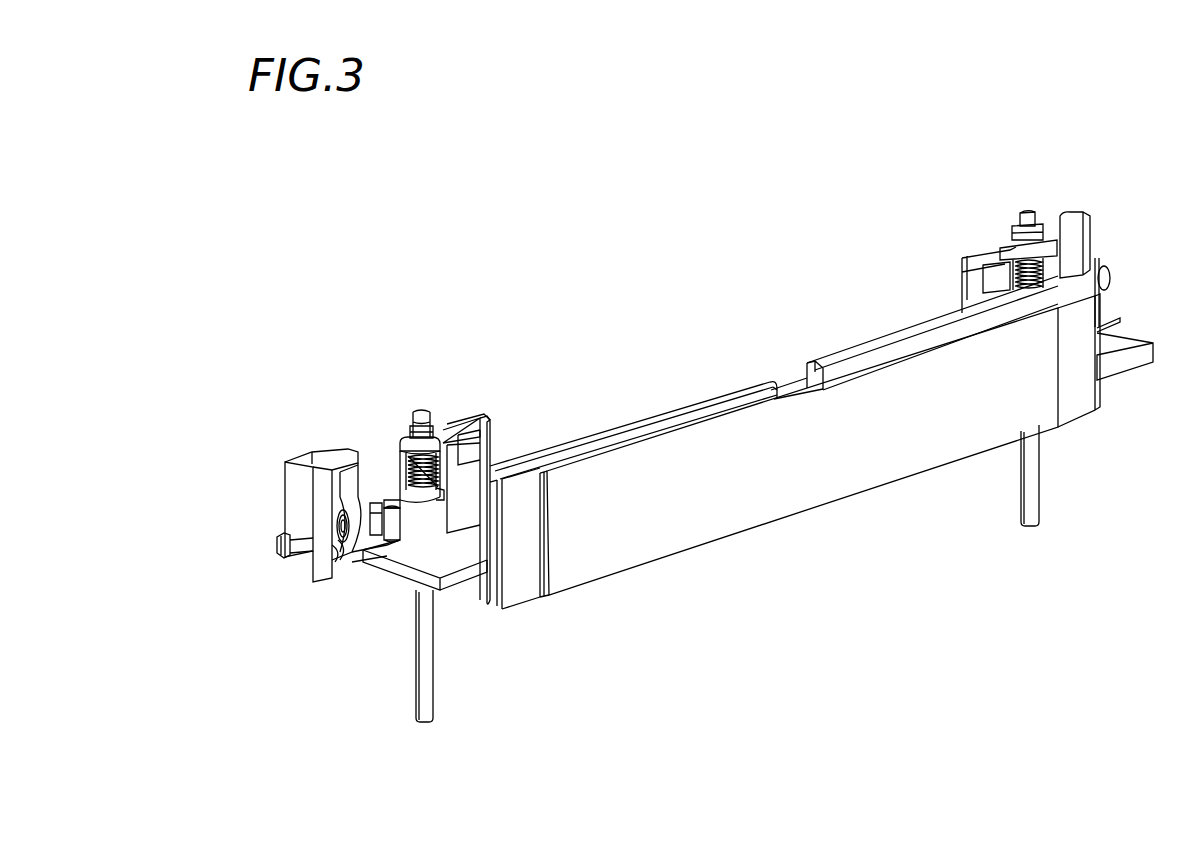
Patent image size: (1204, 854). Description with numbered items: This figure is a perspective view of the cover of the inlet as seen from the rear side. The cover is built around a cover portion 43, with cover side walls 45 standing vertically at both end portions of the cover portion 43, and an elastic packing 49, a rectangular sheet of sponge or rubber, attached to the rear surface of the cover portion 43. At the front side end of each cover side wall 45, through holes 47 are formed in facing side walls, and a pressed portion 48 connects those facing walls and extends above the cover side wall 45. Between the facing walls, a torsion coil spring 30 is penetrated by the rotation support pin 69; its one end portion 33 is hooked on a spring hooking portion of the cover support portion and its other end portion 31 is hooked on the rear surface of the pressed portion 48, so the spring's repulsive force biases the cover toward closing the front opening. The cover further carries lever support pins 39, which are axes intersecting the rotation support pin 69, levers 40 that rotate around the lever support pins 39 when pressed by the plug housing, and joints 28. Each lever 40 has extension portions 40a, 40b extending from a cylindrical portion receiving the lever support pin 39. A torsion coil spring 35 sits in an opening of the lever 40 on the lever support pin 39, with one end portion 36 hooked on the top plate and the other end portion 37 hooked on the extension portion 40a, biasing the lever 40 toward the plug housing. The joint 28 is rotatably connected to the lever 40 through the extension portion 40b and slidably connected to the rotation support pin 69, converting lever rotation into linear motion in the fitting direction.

The joint 28 is at (400, 540).
The torsion coil spring 30 is at (349, 545).
The other end portion 31 is at (325, 453).
The one end portion 33 is at (385, 558).
The torsion coil spring 35 is at (408, 482).
The one end portion 36 is at (435, 495).
The other end portion 37 is at (493, 466).
The lever support pin 39 is at (425, 700).
The lever 40 is at (455, 418).
The extension portion 40a is at (475, 495).
The extension portion 40b is at (392, 507).
The cover portion 43 is at (520, 577).
The cover side wall 45 is at (455, 560).
The through hole 47 is at (317, 567).
The pressed portion 48 is at (300, 481).
The elastic packing 49 is at (783, 479).
The rotation support pin 69 is at (306, 541).